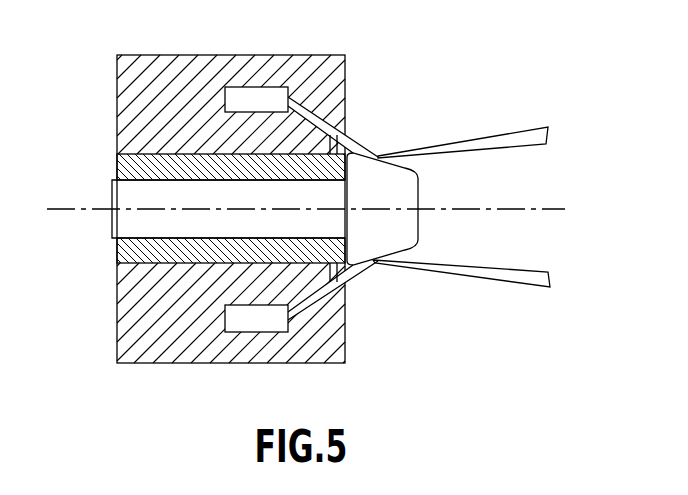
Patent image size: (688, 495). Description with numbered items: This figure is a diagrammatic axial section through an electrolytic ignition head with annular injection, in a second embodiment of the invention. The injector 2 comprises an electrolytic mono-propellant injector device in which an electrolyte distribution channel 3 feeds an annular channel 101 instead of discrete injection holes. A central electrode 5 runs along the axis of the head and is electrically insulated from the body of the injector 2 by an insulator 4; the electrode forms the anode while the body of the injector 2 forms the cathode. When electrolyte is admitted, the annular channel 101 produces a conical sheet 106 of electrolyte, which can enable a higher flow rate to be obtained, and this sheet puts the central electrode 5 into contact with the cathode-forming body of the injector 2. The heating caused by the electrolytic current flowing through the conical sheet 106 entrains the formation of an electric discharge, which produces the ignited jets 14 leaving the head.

The injector 2 is at (125, 93).
The electrolyte distribution channel 3 is at (250, 100).
The insulator 4 is at (123, 166).
The central electrode 5 is at (128, 224).
The ignited jets 14 is at (503, 141).
The annular channel 101 is at (340, 133).
The conical sheet 106 is at (352, 270).